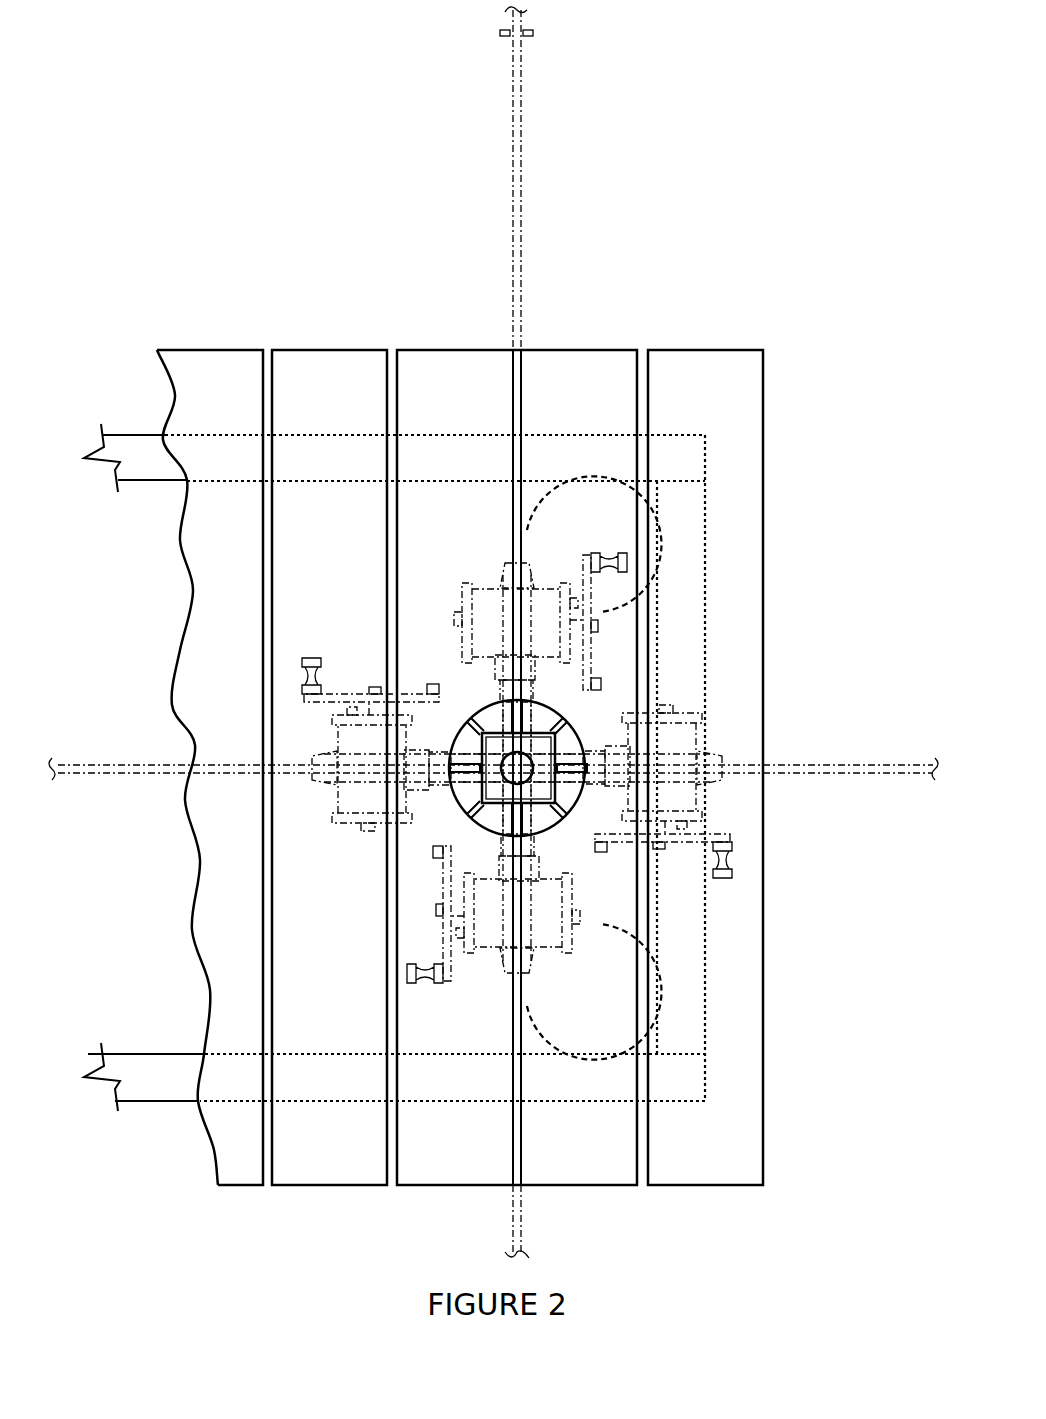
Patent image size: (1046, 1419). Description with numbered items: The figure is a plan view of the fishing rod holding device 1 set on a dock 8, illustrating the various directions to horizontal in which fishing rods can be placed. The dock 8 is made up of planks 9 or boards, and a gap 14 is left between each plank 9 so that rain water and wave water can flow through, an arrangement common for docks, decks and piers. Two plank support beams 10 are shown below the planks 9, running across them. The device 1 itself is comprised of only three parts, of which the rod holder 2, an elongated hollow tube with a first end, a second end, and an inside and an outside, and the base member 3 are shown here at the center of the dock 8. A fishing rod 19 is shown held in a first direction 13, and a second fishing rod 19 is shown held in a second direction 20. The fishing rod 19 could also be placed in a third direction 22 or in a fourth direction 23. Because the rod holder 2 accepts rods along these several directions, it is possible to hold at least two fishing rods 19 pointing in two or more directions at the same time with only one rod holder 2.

The device 1 is at (495, 730).
The rod holder 2 is at (480, 790).
The base member 3 is at (556, 828).
The dock 8 is at (765, 930).
The planks 9 is at (222, 350).
The plank support beam 10 is at (148, 435).
The first direction 13 is at (521, 178).
The gap 14 is at (392, 1185).
The fishing rod 19 is at (521, 230).
The second direction 20 is at (850, 765).
The third direction 22 is at (146, 763).
The fourth direction 23 is at (513, 1225).